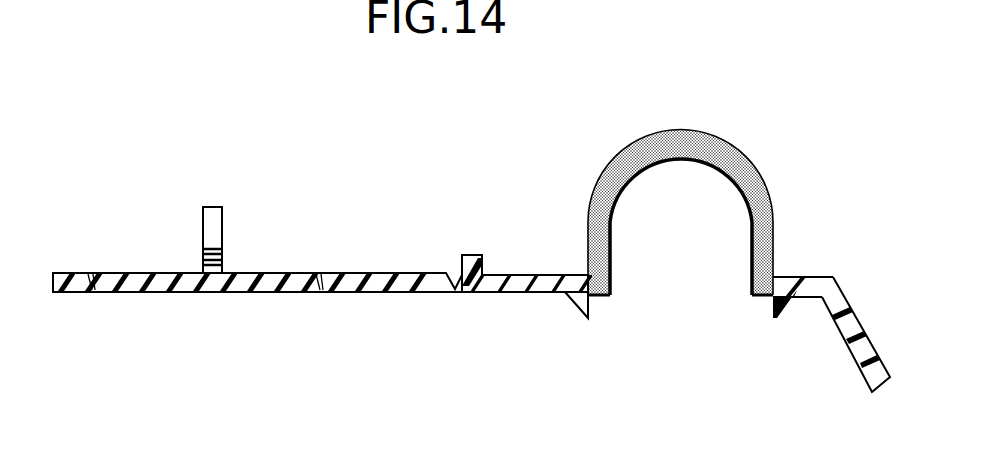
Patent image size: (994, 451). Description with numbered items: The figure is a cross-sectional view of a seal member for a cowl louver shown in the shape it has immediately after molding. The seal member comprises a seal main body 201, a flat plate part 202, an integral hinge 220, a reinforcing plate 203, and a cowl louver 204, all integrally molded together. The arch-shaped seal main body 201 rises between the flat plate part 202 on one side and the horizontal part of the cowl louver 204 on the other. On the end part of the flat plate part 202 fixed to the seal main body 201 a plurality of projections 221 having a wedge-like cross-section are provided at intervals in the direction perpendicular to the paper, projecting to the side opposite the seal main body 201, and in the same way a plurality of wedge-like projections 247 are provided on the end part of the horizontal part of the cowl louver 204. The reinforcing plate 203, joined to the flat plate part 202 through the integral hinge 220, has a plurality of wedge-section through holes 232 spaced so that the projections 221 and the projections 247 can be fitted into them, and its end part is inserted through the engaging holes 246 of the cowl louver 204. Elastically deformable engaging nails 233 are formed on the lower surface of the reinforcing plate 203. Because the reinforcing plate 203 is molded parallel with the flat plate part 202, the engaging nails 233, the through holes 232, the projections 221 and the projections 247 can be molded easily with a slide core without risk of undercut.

The seal main body 201 is at (720, 137).
The flat plate part 202 is at (507, 274).
The reinforcing plate 203 is at (212, 292).
The cowl louver 204 is at (845, 340).
The integral hinge 220 is at (455, 292).
The projections 221 is at (577, 305).
The through holes 232 is at (90, 292).
The engaging nails 233 is at (215, 225).
The engaging holes 246 is at (845, 322).
The projections 247 is at (770, 300).